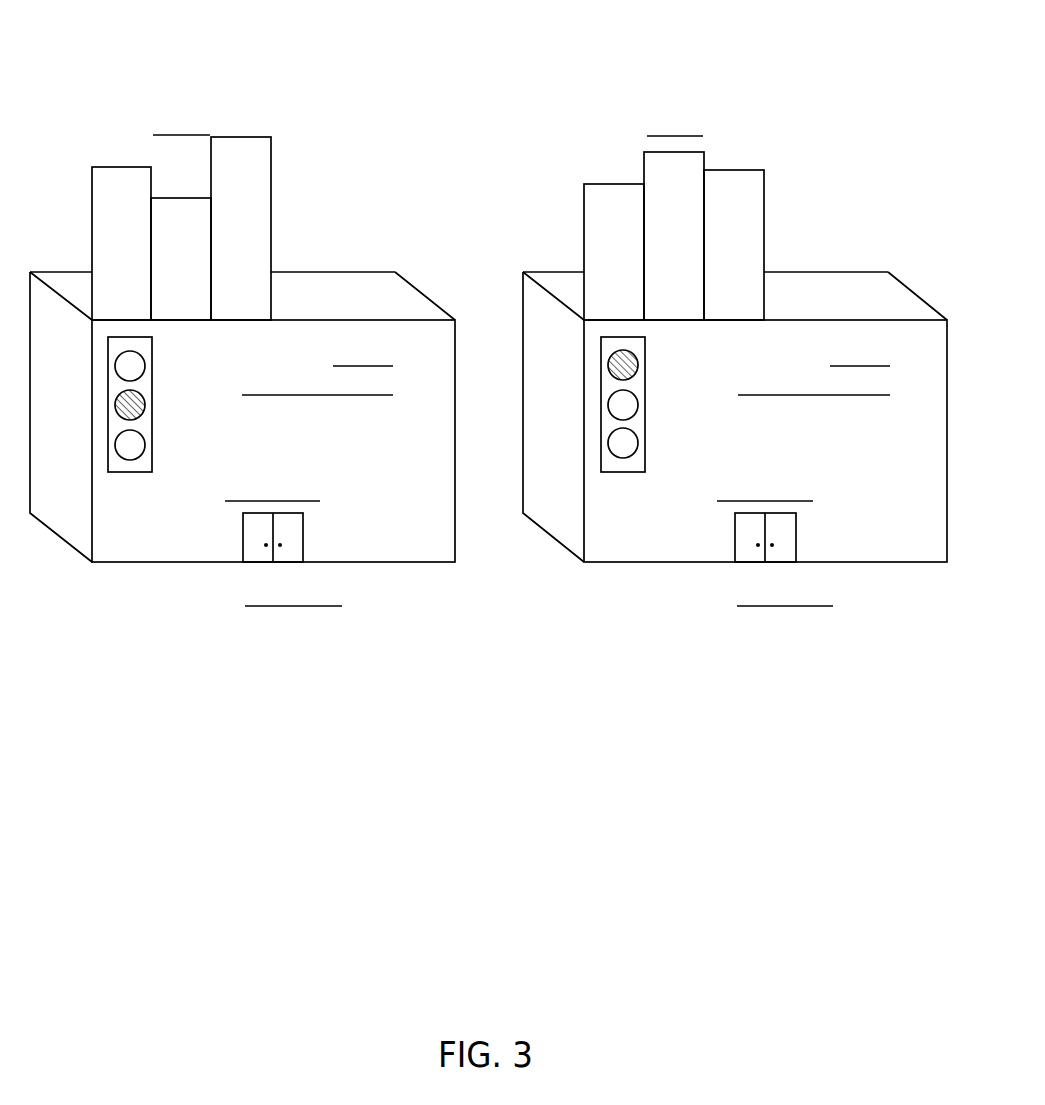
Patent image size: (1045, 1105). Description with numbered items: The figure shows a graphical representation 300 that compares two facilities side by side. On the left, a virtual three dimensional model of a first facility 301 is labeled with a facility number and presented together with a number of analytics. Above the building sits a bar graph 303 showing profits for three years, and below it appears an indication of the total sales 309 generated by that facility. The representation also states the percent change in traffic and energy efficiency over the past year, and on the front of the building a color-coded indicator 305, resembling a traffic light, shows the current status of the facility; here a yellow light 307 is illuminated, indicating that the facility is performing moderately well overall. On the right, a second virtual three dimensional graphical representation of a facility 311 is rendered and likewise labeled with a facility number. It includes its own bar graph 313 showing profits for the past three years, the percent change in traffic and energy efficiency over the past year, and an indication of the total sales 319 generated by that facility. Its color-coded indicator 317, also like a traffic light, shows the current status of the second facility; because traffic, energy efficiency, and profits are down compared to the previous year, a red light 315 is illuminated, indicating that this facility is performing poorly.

The graphical representation 300 is at (437, 61).
The facility 301 is at (322, 271).
The bar graph 303 is at (150, 122).
The color-coded indicator 305 is at (108, 347).
The yellow light 307 is at (117, 412).
The total sales 309 is at (267, 607).
The facility 311 is at (838, 271).
The bar graph 313 is at (640, 128).
The red light 315 is at (607, 366).
The color-coded indicator 317 is at (601, 430).
The total sales 319 is at (772, 607).